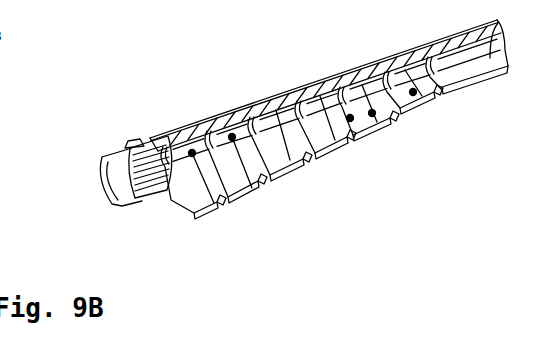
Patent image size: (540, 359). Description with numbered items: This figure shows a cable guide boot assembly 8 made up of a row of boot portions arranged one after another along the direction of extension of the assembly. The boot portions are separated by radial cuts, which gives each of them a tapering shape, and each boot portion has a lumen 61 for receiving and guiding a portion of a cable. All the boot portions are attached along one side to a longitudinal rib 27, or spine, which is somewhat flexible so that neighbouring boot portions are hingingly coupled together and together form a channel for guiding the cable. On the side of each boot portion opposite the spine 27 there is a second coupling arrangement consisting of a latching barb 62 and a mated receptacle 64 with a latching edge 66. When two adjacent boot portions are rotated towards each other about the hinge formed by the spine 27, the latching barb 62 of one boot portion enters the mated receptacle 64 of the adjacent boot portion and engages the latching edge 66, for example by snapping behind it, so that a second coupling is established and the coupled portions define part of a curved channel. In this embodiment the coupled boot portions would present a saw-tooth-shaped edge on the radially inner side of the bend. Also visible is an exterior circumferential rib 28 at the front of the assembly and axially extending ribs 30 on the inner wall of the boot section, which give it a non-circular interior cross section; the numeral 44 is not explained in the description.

The cable guide boot assembly 8 is at (230, 90).
The longitudinal rib 27 is at (316, 80).
The exterior circumferential rib 28 is at (143, 145).
The ribs 30 is at (143, 182).
The flexible finger 44 is at (350, 118).
The lumen 61 is at (232, 137).
The latching barb 62 is at (317, 152).
The mated receptacle 64 is at (413, 92).
The latching edge 66 is at (258, 190).